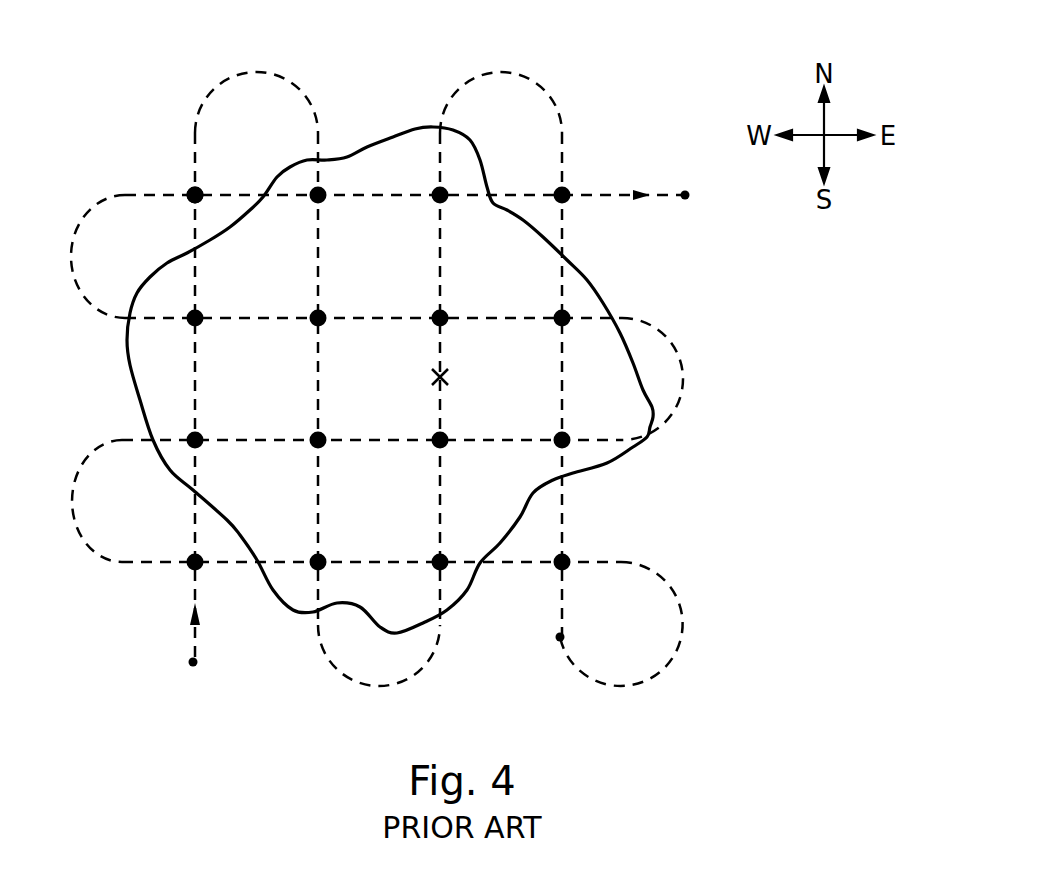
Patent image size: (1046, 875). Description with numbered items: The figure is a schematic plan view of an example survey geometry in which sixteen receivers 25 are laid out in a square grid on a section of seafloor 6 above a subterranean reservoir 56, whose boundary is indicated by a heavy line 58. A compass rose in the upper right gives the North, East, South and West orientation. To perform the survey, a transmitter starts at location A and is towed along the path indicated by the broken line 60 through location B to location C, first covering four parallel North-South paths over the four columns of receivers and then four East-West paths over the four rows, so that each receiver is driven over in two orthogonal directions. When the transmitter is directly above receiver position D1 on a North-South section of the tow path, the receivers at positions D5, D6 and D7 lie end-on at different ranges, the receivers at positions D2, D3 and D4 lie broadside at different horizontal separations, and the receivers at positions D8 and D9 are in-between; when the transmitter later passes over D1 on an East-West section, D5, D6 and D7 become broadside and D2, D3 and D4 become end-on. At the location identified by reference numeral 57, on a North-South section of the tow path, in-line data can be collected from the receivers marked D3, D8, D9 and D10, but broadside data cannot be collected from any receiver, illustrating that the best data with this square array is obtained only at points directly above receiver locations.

The seafloor 6 is at (653, 139).
The receivers 25 is at (196, 193).
The subterranean reservoir 56 is at (398, 250).
The transmitter location 57 is at (446, 376).
The heavy line 58 is at (597, 291).
The broken line 60 is at (192, 603).
The receiver position D1 is at (202, 316).
The receiver position D2 is at (324, 324).
The receiver position D3 is at (436, 314).
The receiver position D4 is at (560, 314).
The receiver position D5 is at (202, 438).
The receiver position D6 is at (202, 568).
The receiver position D7 is at (204, 190).
The receiver position D8 is at (436, 437).
The receiver position D9 is at (436, 561).
The receiver position D10 is at (444, 203).